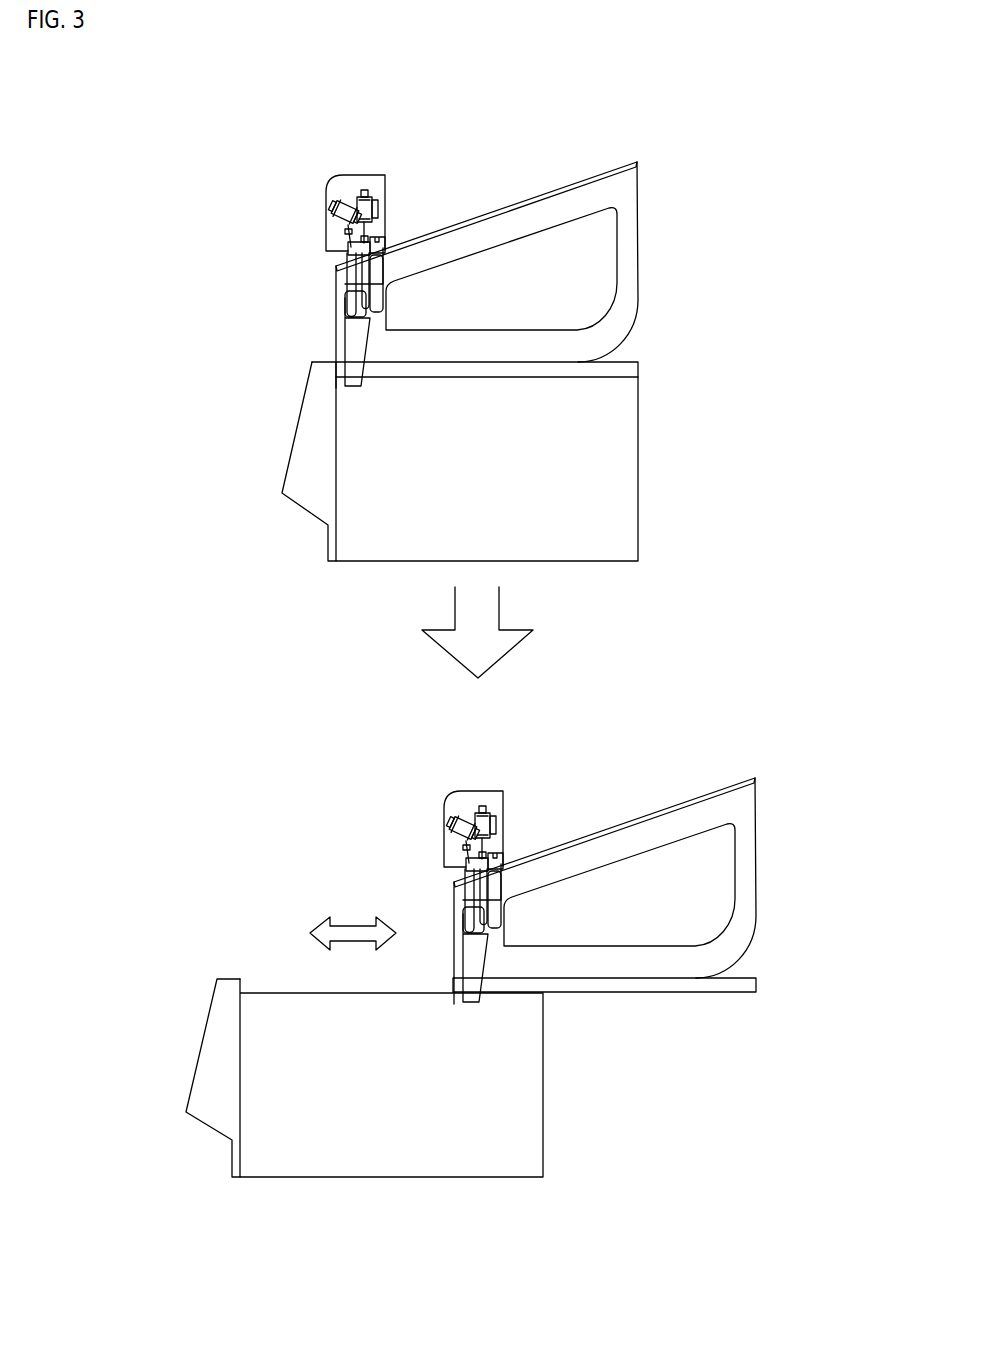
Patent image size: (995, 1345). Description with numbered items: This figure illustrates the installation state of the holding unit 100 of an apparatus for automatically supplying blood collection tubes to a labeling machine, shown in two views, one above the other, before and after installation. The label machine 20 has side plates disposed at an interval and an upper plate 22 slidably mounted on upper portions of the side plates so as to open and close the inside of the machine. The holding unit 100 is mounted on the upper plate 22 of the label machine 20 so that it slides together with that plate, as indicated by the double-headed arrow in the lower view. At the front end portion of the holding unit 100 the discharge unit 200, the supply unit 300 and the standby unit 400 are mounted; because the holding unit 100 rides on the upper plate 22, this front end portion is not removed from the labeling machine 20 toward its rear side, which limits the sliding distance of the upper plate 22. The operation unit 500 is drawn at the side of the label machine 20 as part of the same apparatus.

The label machine 20 is at (662, 485).
The upper plate 22 is at (633, 370).
The holding unit 100 is at (678, 190).
The discharge unit 200 is at (317, 337).
The supply unit 300 is at (335, 192).
The standby unit 400 is at (383, 197).
The operation unit 500 is at (288, 438).